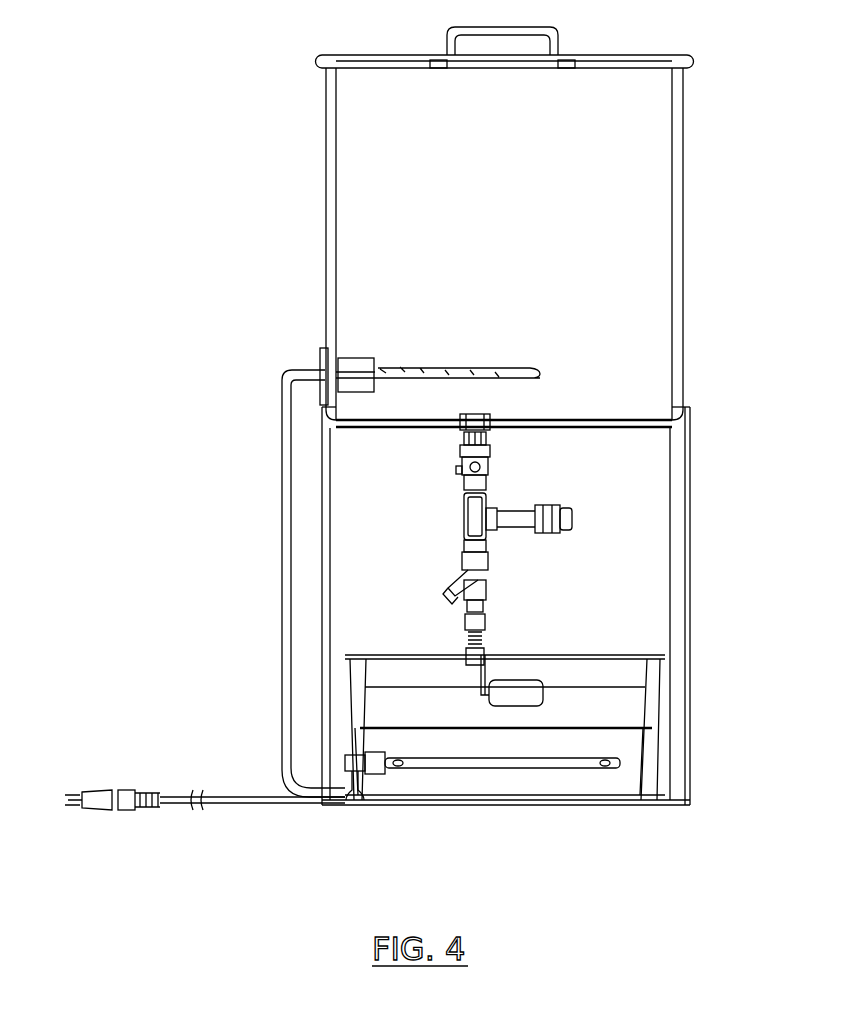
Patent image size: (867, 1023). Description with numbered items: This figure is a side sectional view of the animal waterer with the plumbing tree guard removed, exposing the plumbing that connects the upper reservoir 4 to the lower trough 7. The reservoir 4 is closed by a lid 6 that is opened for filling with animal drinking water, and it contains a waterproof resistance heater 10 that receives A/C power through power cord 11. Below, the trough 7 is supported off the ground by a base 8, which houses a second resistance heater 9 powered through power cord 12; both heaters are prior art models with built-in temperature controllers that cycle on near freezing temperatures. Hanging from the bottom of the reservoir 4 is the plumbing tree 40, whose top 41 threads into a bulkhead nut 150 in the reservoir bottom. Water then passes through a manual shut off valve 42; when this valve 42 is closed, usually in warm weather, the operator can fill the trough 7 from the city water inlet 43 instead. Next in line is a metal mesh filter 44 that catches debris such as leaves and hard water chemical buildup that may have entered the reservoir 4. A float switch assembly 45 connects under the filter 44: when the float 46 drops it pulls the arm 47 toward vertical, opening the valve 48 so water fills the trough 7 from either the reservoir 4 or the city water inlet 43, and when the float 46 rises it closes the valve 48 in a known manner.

The reservoir 4 is at (679, 170).
The lid 6 is at (386, 62).
The trough 7 is at (650, 700).
The base 8 is at (650, 773).
The resistance heater 9 is at (477, 762).
The waterproof resistance heater 10 is at (514, 374).
The power cord 11 is at (282, 428).
The power cord 12 is at (300, 803).
The plumbing tree 40 is at (420, 433).
The top 41 is at (484, 436).
The manual shut off valve 42 is at (488, 462).
The city water inlet 43 is at (545, 509).
The filter 44 is at (465, 580).
The float switch assembly 45 is at (462, 625).
The float 46 is at (536, 692).
The arm 47 is at (488, 670).
The valve 48 is at (488, 650).
The bulkhead nut 150 is at (510, 420).